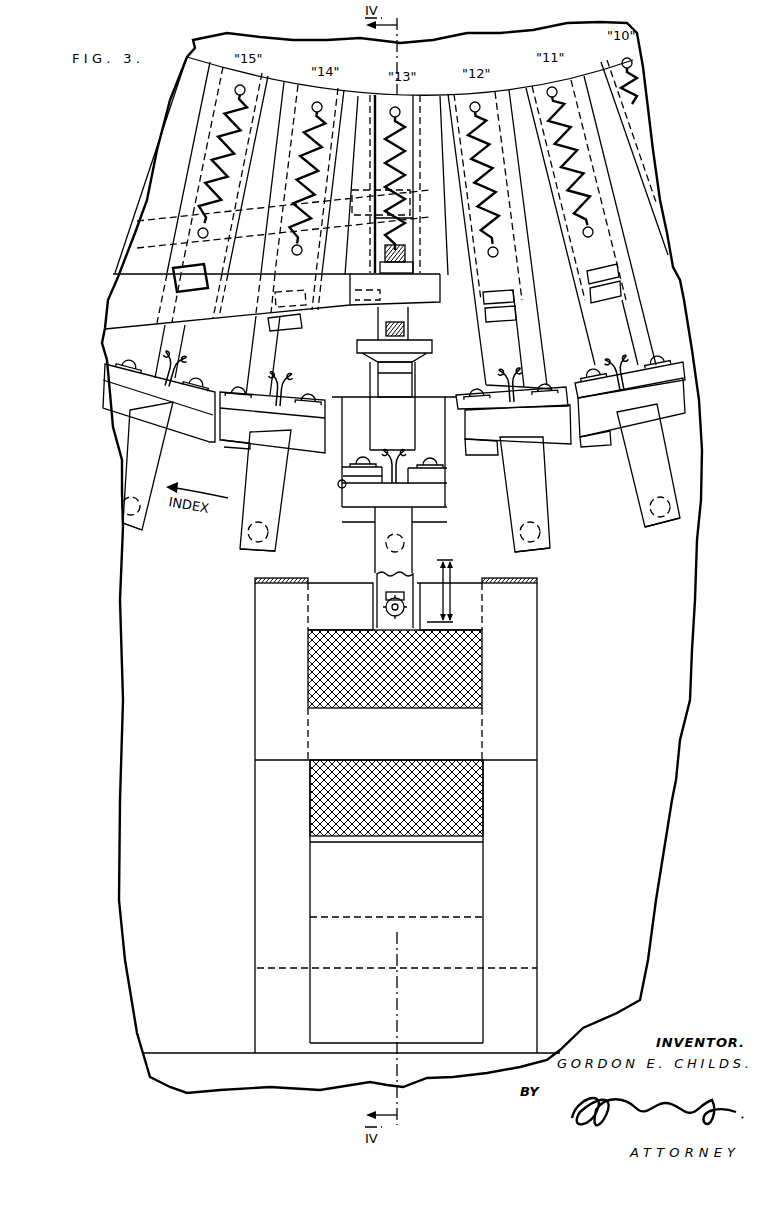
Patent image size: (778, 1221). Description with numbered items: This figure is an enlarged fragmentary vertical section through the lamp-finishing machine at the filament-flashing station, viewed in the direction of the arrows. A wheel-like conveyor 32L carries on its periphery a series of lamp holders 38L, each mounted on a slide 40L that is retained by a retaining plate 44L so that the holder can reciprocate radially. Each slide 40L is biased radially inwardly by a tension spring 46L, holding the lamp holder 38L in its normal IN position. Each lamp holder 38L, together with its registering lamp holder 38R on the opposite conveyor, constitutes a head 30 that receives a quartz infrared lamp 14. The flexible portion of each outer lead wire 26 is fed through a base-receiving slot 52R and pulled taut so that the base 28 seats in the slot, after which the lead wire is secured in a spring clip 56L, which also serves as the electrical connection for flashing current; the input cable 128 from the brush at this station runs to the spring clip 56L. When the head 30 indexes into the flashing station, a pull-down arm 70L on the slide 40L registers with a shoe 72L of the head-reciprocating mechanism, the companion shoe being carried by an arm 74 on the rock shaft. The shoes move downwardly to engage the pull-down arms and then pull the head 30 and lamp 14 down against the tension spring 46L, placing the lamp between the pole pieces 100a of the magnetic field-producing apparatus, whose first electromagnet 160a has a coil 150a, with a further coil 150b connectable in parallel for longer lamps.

The conveyor 32L is at (283, 47).
The tension spring 46L is at (300, 147).
The slide 40L is at (300, 167).
The retaining plate 44L is at (160, 237).
The arm 74 is at (160, 277).
The pull-down arm 70L is at (280, 318).
The shoe 72L is at (412, 292).
The outer lead wire 26 is at (168, 354).
The spring clip 56L is at (186, 382).
The lamp holder 38L is at (257, 463).
The input cable 128 is at (337, 483).
The quartz infrared lamp 14 is at (242, 532).
The head 30 is at (258, 556).
The pole pieces 100a is at (325, 608).
The lamp holder 38R is at (387, 580).
The base 28 is at (404, 592).
The base-receiving slot 52R is at (390, 592).
The first electromagnet 160a is at (250, 689).
The coil 150a is at (318, 785).
The coil 150b is at (320, 885).